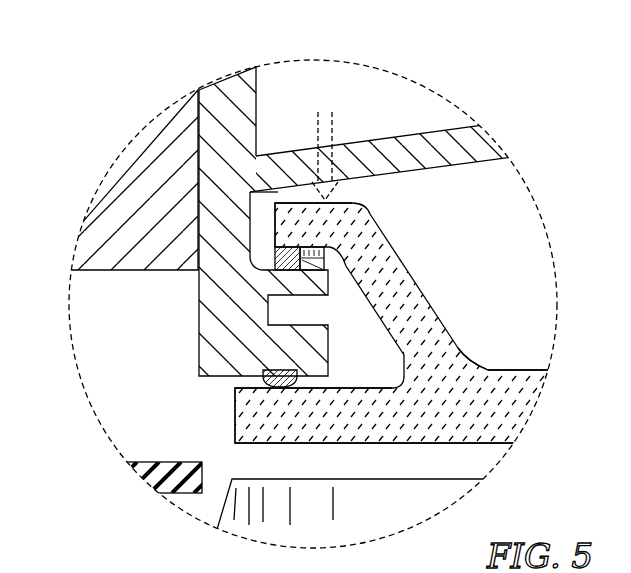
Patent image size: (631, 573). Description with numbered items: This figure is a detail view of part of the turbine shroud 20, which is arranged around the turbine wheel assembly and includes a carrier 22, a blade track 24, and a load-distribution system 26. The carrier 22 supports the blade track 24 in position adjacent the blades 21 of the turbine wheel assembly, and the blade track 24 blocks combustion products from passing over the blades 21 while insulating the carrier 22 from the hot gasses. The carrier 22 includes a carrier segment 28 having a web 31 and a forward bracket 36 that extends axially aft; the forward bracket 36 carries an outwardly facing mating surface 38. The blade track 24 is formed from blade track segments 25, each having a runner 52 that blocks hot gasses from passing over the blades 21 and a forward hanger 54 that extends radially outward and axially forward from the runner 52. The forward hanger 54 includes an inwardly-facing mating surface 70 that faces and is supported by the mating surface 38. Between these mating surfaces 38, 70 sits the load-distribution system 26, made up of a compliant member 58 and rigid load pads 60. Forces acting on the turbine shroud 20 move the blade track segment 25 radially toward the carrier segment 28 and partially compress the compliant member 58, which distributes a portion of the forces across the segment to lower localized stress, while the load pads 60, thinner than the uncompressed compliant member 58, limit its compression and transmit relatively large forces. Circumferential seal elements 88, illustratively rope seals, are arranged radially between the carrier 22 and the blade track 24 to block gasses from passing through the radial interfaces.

The turbine shroud 20 is at (487, 117).
The blades 21 is at (430, 500).
The carrier 22 is at (370, 100).
The blade track 24 is at (536, 300).
The blade track segment 25 is at (528, 366).
The load-distribution system 26 is at (258, 248).
The carrier segment 28 is at (276, 90).
The web 31 is at (407, 128).
The forward bracket 36 is at (197, 365).
The outwardly facing mating surface 38 is at (270, 262).
The runner 52 is at (484, 448).
The forward hanger 54 is at (292, 200).
The compliant member 58 is at (279, 276).
The load pads 60 is at (332, 265).
The inwardly-facing mating surface 70 is at (254, 243).
The seal elements 88 is at (263, 381).